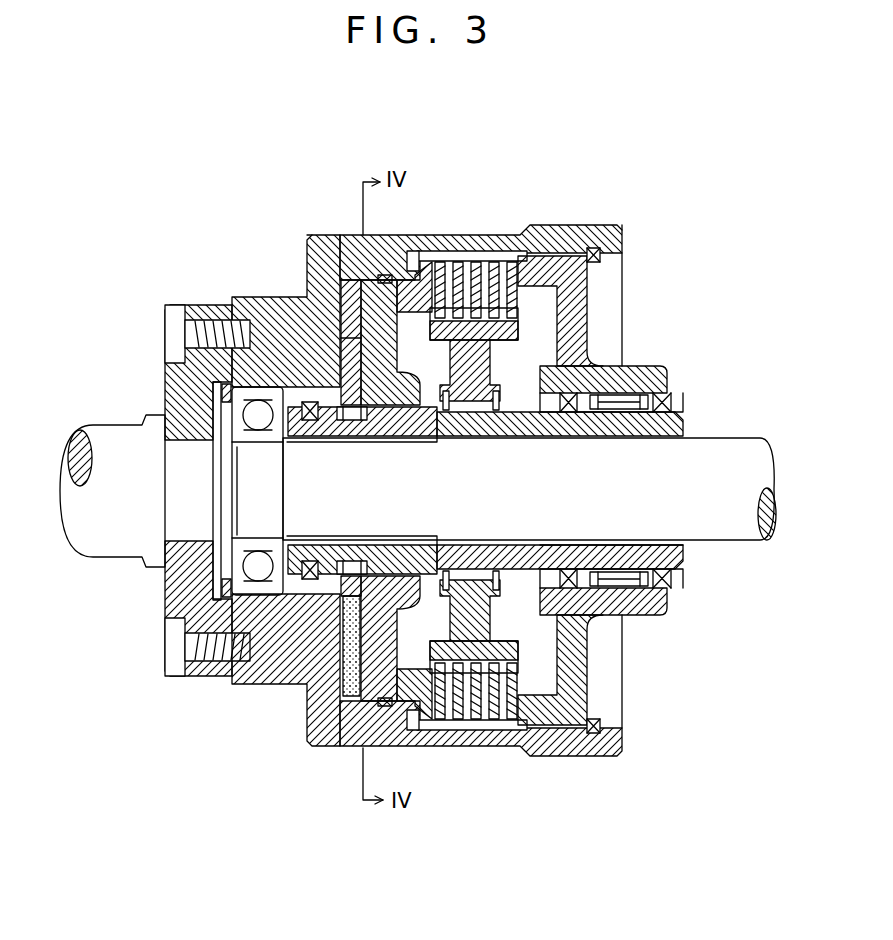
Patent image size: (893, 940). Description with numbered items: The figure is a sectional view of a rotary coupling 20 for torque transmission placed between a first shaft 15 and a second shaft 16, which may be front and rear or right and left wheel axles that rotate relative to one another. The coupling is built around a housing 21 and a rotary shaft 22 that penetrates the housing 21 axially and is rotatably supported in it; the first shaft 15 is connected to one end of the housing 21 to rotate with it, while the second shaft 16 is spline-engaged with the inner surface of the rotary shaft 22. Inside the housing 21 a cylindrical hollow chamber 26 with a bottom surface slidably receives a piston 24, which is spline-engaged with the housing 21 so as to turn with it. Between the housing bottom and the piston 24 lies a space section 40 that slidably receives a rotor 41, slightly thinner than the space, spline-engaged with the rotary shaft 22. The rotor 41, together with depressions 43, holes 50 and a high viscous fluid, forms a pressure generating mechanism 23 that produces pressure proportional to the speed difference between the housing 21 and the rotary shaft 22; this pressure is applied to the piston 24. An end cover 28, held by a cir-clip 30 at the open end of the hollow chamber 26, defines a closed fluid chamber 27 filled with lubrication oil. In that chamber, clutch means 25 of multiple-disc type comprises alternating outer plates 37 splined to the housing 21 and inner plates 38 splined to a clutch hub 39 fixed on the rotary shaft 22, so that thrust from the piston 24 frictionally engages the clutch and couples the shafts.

The first shaft 15 is at (113, 437).
The second shaft 16 is at (745, 445).
The rotary coupling 20 is at (597, 214).
The housing 21 is at (305, 255).
The rotary shaft 22 is at (683, 570).
The pressure generating mechanism 23 is at (351, 697).
The piston 24 is at (405, 283).
The clutch means 25 is at (498, 242).
The hollow chamber 26 is at (423, 727).
The fluid chamber 27 is at (545, 645).
The end cover 28 is at (577, 325).
The cir-clip 30 is at (592, 254).
The outer plates 37 is at (470, 262).
The inner plates 38 is at (487, 728).
The clutch hub 39 is at (498, 413).
The space section 40 is at (342, 277).
The rotor 41 is at (352, 403).
The depressions 43 is at (337, 657).
The holes 50 is at (340, 350).